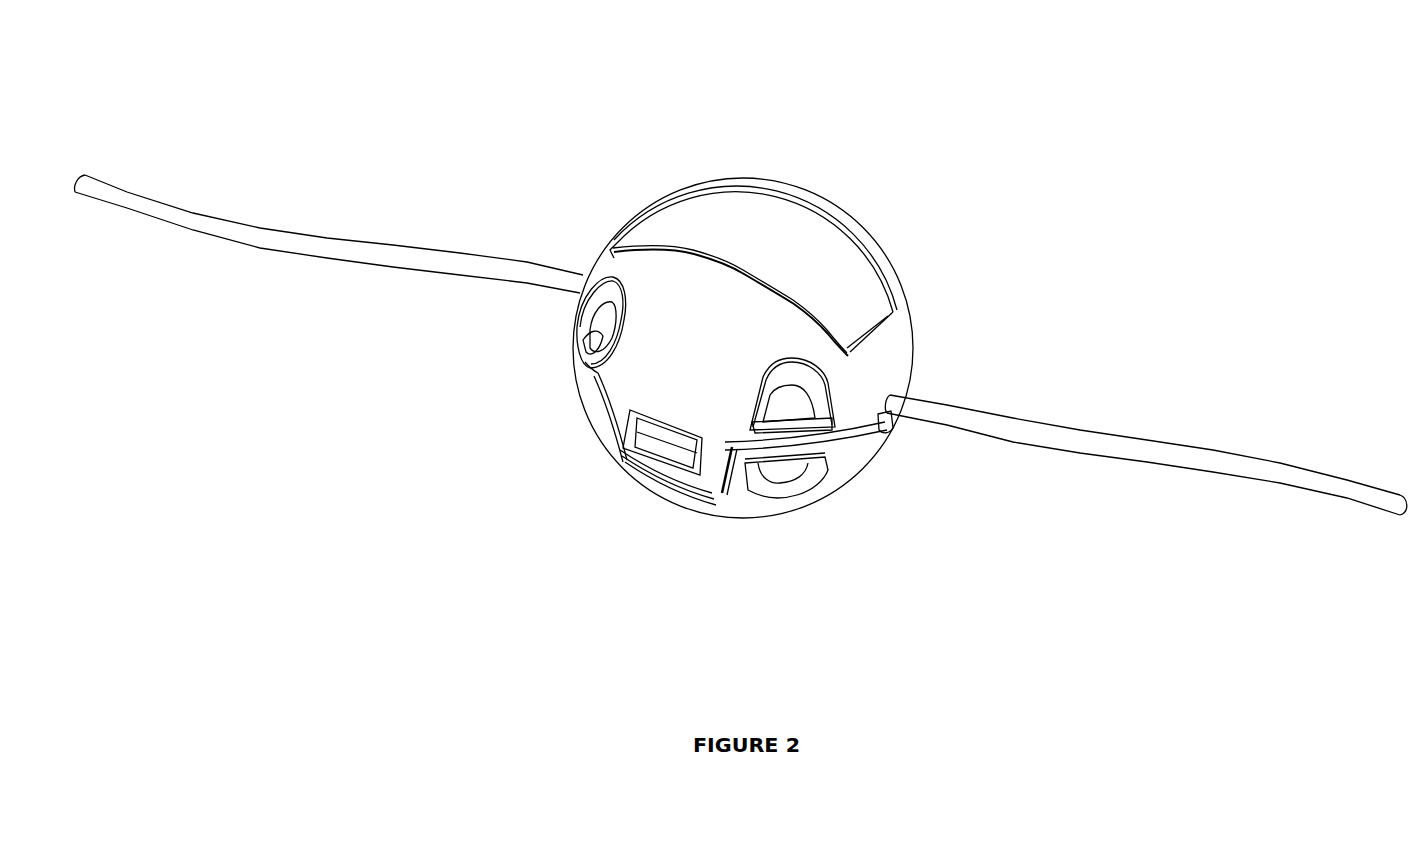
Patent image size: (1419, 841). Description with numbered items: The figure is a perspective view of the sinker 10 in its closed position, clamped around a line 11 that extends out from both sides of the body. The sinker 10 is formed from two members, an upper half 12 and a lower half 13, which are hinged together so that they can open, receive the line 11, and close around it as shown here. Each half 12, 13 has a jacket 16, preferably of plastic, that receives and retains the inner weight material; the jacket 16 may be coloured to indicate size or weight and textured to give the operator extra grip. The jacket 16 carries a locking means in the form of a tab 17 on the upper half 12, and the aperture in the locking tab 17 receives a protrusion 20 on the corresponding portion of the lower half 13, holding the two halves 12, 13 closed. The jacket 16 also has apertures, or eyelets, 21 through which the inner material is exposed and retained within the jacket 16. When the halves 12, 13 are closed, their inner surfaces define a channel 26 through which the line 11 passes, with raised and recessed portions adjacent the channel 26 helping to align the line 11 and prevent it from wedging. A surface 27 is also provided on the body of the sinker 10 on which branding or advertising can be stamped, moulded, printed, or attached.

The sinker 10 is at (1045, 220).
The line 11 is at (1325, 495).
The upper half 12 is at (578, 150).
The lower half 13 is at (528, 465).
The jacket 16 is at (725, 320).
The tab 17 is at (682, 478).
The protrusion 20 is at (665, 443).
The apertures 21 is at (610, 313).
The channel 26 is at (890, 425).
The surface 27 is at (760, 232).